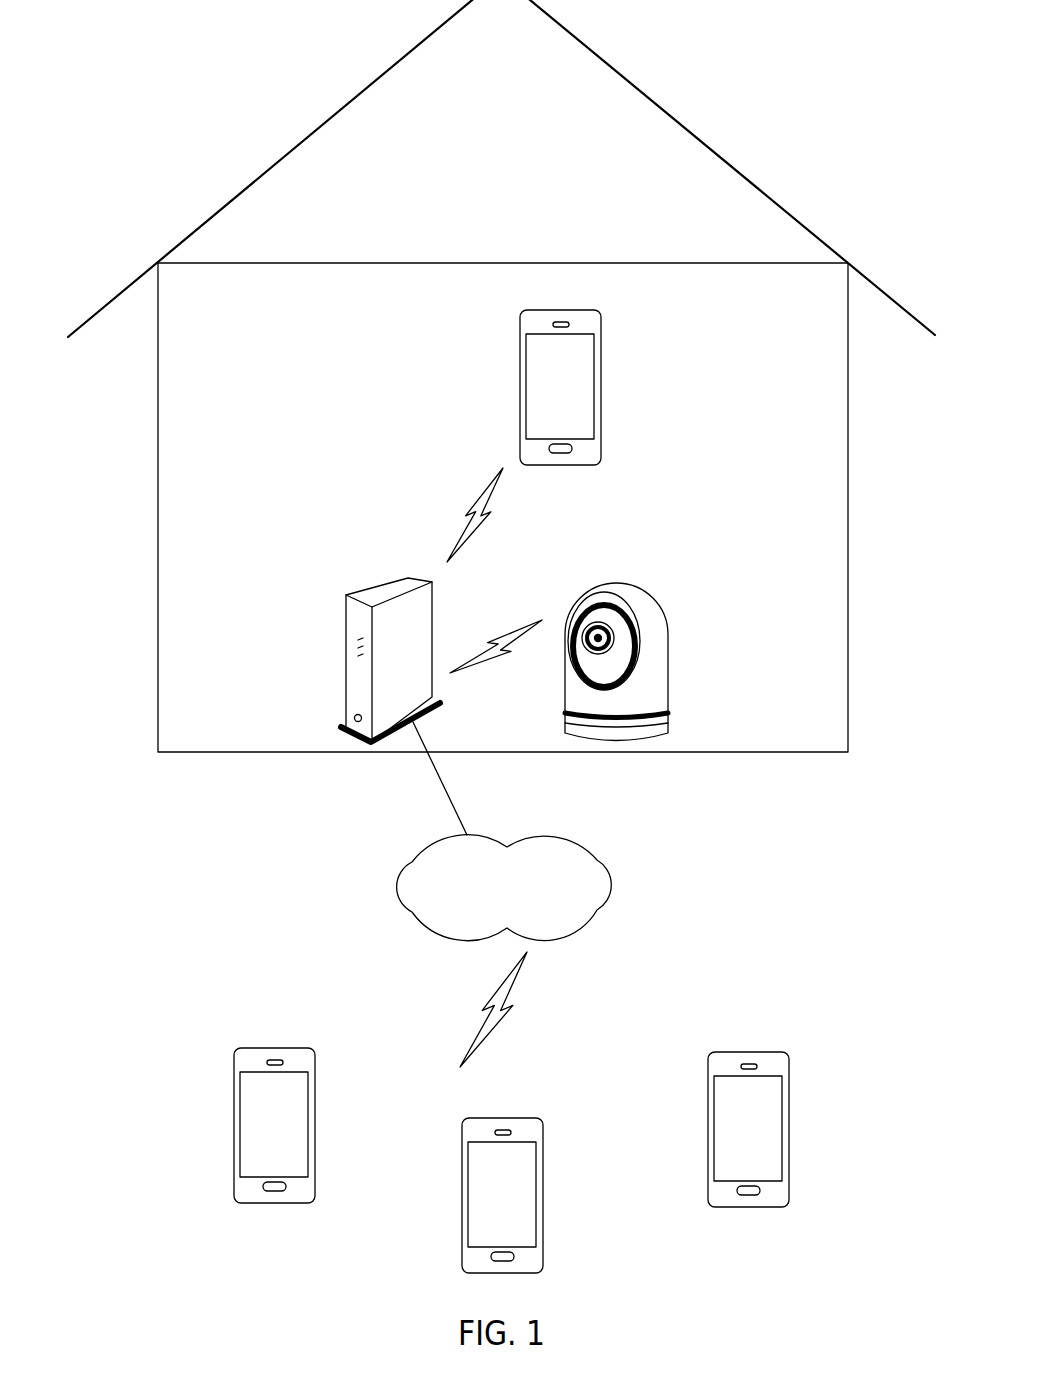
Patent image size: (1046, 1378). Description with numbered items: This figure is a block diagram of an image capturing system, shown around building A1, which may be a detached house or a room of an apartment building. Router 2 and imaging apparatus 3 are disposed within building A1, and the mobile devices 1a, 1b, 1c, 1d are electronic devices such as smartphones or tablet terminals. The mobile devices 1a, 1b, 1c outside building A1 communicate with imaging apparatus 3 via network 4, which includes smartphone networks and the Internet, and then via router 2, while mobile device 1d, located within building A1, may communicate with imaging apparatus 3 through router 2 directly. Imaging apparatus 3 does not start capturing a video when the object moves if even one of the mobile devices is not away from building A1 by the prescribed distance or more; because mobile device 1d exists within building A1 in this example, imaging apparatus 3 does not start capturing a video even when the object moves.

The building A1 is at (668, 106).
The mobile device 1a is at (258, 1048).
The mobile device 1b is at (487, 1118).
The mobile device 1c is at (730, 1052).
The mobile device 1d is at (546, 310).
The router 2 is at (384, 578).
The imaging apparatus 3 is at (613, 584).
The network 4 is at (543, 833).